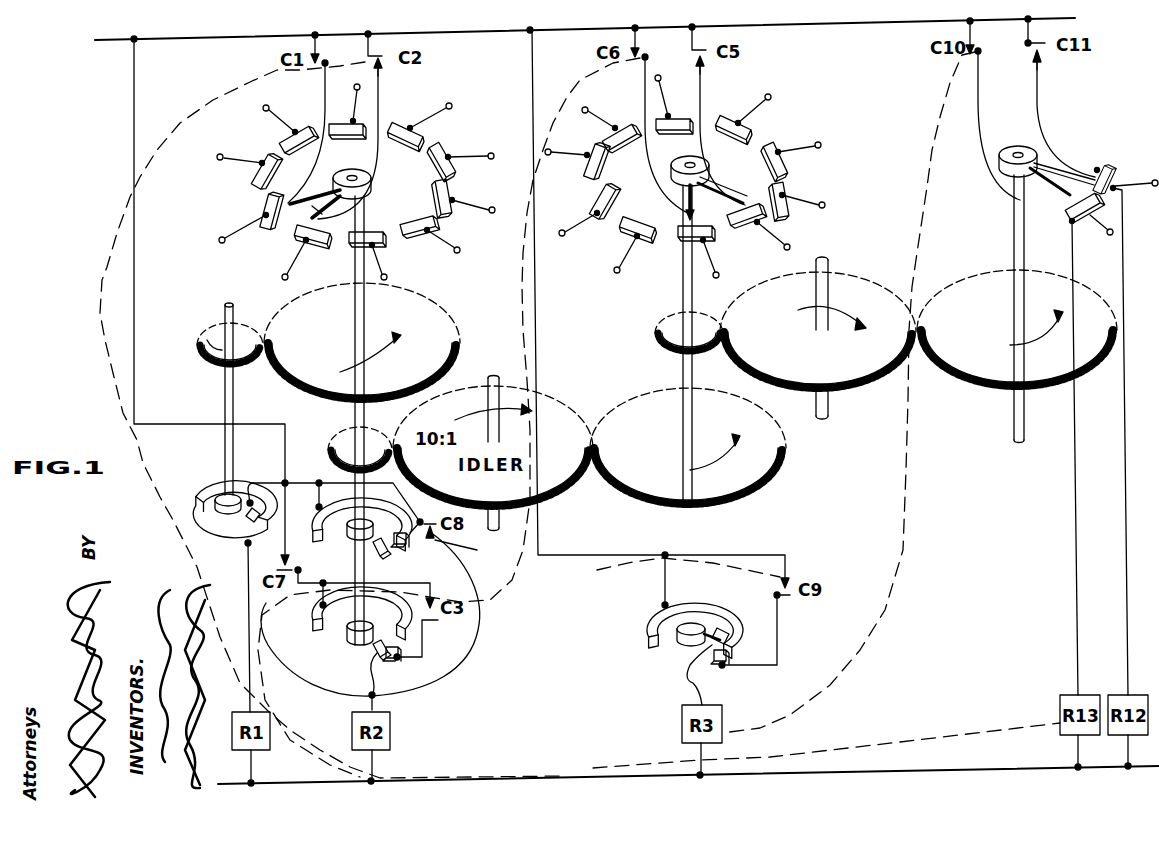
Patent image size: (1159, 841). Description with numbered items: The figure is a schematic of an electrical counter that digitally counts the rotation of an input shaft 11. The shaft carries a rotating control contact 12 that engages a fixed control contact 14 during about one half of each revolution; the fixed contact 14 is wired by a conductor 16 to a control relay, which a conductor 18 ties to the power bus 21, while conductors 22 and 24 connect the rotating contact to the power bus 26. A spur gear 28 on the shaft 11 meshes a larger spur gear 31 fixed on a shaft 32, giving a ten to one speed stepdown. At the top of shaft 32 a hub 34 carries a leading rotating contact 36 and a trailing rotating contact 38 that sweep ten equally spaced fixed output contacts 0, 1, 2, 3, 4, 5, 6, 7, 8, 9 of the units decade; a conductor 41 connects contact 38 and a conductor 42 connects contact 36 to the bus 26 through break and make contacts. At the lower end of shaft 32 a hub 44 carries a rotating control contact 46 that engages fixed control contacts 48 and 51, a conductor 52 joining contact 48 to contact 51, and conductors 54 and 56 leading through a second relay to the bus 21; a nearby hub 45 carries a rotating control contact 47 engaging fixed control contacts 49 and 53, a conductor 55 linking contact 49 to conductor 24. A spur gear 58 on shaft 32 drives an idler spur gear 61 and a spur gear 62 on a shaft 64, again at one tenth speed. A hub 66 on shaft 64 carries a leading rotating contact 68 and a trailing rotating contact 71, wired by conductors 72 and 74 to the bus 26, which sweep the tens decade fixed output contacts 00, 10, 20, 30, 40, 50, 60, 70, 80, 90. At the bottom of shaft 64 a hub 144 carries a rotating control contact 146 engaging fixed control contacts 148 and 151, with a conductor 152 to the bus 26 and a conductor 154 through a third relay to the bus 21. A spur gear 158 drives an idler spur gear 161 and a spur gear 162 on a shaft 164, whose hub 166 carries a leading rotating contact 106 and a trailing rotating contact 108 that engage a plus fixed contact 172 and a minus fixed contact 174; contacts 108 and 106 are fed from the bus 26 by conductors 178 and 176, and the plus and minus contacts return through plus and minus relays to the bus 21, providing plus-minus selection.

The fixed output contact 0 is at (307, 252).
The fixed output contact 1 is at (372, 256).
The fixed output contact 2 is at (430, 234).
The fixed output contact 3 is at (463, 198).
The fixed output contact 4 is at (460, 157).
The fixed output contact 5 is at (419, 127).
The fixed output contact 6 is at (347, 111).
The fixed output contact 7 is at (291, 130).
The fixed output contact 8 is at (250, 164).
The fixed output contact 9 is at (251, 217).
The fixed output contact 00 is at (629, 245).
The fixed output contact 10 is at (709, 252).
The fixed output contact 20 is at (761, 226).
The fixed output contact 30 is at (796, 197).
The fixed output contact 40 is at (790, 153).
The fixed output contact 50 is at (742, 119).
The fixed output contact 60 is at (674, 104).
The fixed output contact 70 is at (612, 123).
The fixed output contact 80 is at (577, 161).
The fixed output contact 90 is at (589, 209).
The input shaft 11 is at (220, 300).
The rotating control contact 12 is at (250, 502).
The fixed control contact 14 is at (188, 528).
The conductor 16 is at (248, 615).
The conductor 18 is at (258, 768).
The power bus 21 is at (590, 775).
The conductor 22 is at (265, 479).
The conductor 24 is at (134, 180).
The power bus 26 is at (352, 37).
The spur gear 28 is at (200, 328).
The spur gear 31 is at (455, 305).
The shaft 32 is at (354, 276).
The hub 34 is at (352, 169).
The leading rotating contact 36 is at (332, 208).
The trailing rotating contact 38 is at (292, 200).
The conductor 41 is at (323, 99).
The conductor 42 is at (381, 98).
The hub 44 is at (350, 640).
The hub 45 is at (357, 537).
The rotating control contact 46 is at (378, 656).
The rotating control contact 47 is at (382, 553).
The fixed control contact 48 is at (396, 662).
The fixed control contact 49 is at (412, 543).
The fixed control contact 51 is at (318, 627).
The conductor 52 is at (426, 645).
The fixed control contact 53 is at (322, 528).
The conductor 54 is at (368, 690).
The conductor 55 is at (381, 611).
The conductor 56 is at (385, 771).
The spur gear 58 is at (338, 432).
The idler spur gear 61 is at (560, 498).
The spur gear 62 is at (760, 500).
The shaft 64 is at (683, 300).
The hub 66 is at (698, 156).
The leading rotating contact 68 is at (742, 197).
The trailing rotating contact 71 is at (686, 212).
The conductor 72 is at (748, 36).
The conductor 74 is at (628, 37).
The leading rotating contact 106 is at (1097, 170).
The trailing rotating contact 108 is at (1068, 196).
The hub 144 is at (676, 640).
The rotating control contact 146 is at (710, 640).
The fixed control contact 148 is at (728, 665).
The fixed control contact 151 is at (660, 605).
The conductor 152 is at (782, 650).
The conductor 154 is at (690, 682).
The spur gear 158 is at (660, 328).
The idler spur gear 161 is at (843, 270).
The spur gear 162 is at (982, 387).
The shaft 164 is at (1013, 250).
The hub 166 is at (1014, 147).
The plus fixed contact 172 is at (1118, 180).
The minus fixed contact 174 is at (1100, 232).
The conductor 176 is at (1040, 100).
The conductor 178 is at (978, 103).